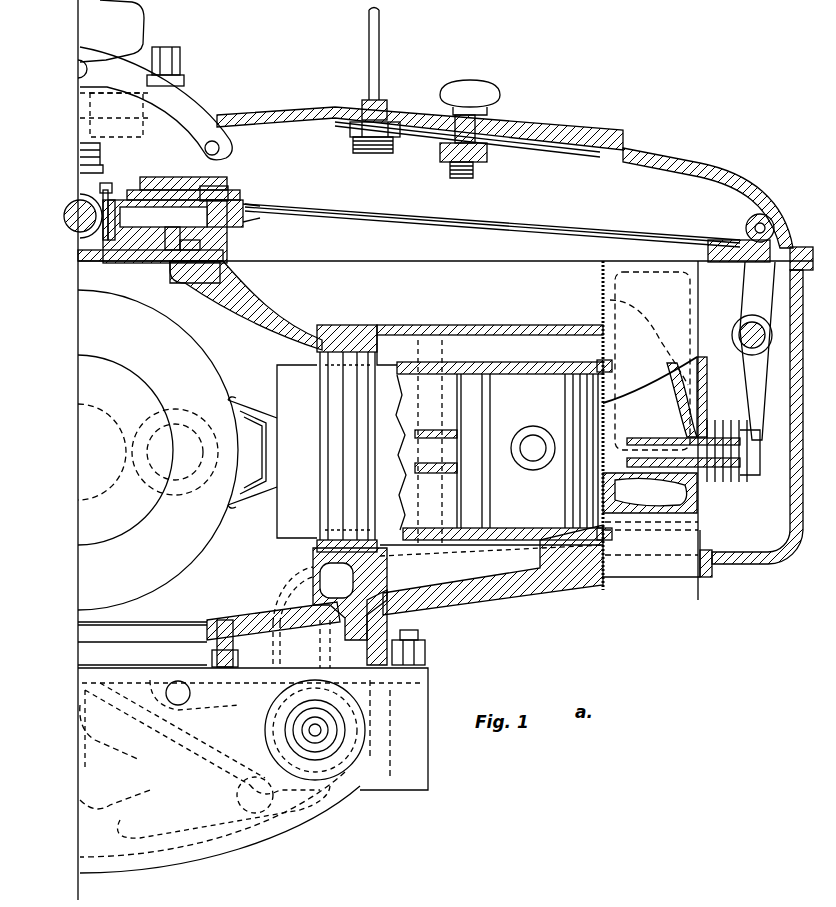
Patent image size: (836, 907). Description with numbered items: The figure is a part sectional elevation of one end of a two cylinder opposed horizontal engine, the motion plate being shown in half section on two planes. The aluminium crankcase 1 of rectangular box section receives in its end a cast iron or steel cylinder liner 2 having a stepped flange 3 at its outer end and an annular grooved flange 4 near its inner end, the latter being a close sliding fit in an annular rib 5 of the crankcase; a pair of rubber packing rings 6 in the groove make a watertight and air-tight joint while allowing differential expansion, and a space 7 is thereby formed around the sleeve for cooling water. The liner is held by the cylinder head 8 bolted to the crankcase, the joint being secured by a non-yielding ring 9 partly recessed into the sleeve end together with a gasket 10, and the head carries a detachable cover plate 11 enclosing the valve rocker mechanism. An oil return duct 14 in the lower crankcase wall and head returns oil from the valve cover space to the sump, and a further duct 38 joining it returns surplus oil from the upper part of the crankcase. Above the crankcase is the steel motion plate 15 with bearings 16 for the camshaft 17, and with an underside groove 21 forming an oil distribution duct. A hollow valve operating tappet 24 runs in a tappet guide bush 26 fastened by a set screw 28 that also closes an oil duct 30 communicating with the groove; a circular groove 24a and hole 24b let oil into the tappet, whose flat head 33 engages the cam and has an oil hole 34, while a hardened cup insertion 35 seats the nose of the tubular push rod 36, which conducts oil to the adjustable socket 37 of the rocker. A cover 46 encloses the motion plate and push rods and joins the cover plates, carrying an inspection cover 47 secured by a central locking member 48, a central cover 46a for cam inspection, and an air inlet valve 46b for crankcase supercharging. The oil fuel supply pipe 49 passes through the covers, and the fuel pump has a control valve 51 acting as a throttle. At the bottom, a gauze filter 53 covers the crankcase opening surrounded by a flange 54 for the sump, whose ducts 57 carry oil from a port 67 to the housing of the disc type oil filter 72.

The crankcase 1 is at (292, 322).
The cylinder liner 2 is at (478, 358).
The stepped flange 3 is at (580, 356).
The annular grooved flange 4 is at (314, 357).
The annular rib 5 is at (338, 340).
The rubber packing rings 6 is at (352, 402).
The space 7 is at (402, 345).
The cylinder head 8 is at (626, 283).
The non-yielding ring 9 is at (608, 366).
The gasket 10 is at (608, 310).
The cover plate 11 is at (758, 552).
The oil return duct 14 is at (275, 590).
The motion plate 15 is at (103, 264).
The bearings 16 is at (118, 192).
The camshaft 17 is at (78, 220).
The groove 21 is at (185, 268).
The hollow valve operating tappet 24 is at (150, 232).
The circular groove 24a is at (172, 250).
The hole 24b is at (220, 190).
The tappet guide bush 26 is at (235, 192).
The set screw 28 is at (182, 175).
The oil duct 30 is at (200, 247).
The flat head 33 is at (110, 195).
The oil hole 34 is at (112, 222).
The hardened cup insertion 35 is at (250, 205).
The push rod 36 is at (470, 220).
The socket 37 is at (740, 236).
The duct 38 is at (416, 398).
The cover 46 is at (262, 122).
The cover 46a is at (190, 86).
The air inlet valve 46b is at (100, 107).
The inspection cover 47 is at (330, 108).
The central locking member 48 is at (490, 160).
The oil fuel supply pipe 49 is at (383, 50).
The control valve 51 is at (252, 680).
The gauze filter 53 is at (152, 660).
The flange 54 is at (365, 628).
The ducts 57 is at (196, 740).
The port 67 is at (176, 682).
The oil filter 72 is at (370, 752).